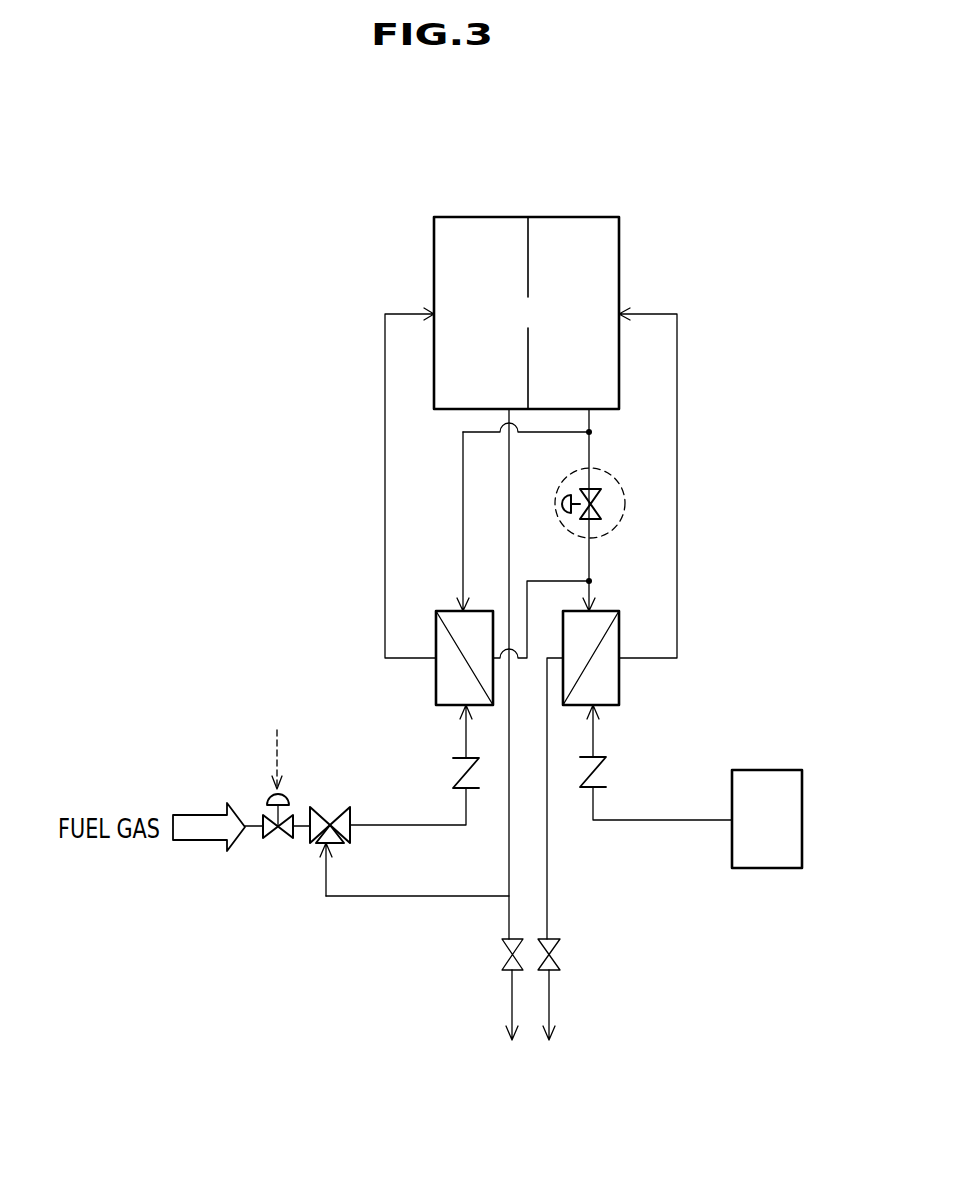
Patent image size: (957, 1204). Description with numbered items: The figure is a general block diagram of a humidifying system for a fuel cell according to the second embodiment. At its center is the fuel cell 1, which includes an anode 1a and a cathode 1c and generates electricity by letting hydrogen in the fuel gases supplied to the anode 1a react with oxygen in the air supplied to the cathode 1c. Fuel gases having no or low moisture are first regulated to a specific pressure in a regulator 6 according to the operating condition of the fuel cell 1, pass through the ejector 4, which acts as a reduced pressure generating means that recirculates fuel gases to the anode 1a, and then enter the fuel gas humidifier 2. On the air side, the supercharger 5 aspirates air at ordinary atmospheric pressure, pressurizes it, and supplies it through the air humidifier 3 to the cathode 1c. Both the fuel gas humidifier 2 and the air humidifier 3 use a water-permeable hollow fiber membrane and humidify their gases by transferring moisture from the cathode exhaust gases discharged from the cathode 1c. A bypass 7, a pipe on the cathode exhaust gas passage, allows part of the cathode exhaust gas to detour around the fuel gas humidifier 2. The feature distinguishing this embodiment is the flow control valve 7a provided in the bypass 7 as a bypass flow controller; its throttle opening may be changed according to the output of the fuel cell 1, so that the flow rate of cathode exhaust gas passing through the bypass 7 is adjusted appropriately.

The fuel cell 1 is at (561, 194).
The anode 1a is at (442, 253).
The cathode 1c is at (614, 252).
The fuel gas humidifier 2 is at (436, 693).
The air humidifier 3 is at (620, 683).
The ejector 4 is at (325, 807).
The supercharger (S/C) 5 is at (768, 770).
The regulator 6 is at (267, 803).
The bypass 7 is at (590, 451).
The flow control valve 7a is at (599, 521).